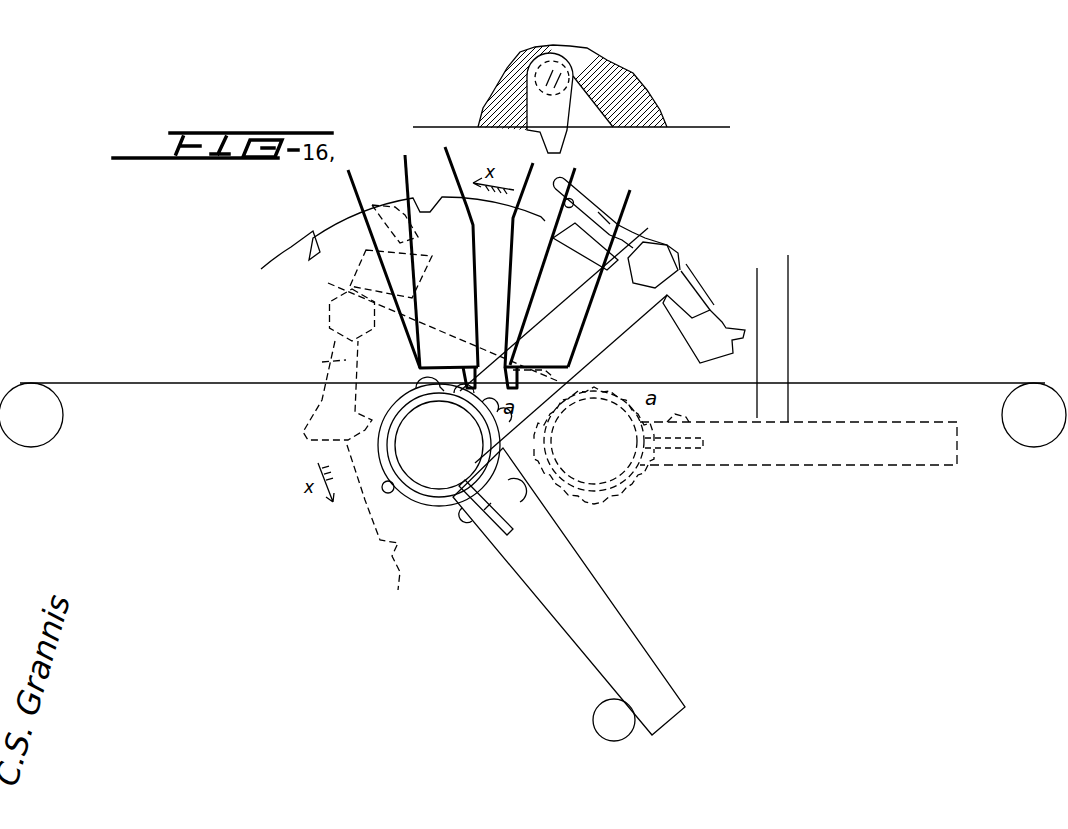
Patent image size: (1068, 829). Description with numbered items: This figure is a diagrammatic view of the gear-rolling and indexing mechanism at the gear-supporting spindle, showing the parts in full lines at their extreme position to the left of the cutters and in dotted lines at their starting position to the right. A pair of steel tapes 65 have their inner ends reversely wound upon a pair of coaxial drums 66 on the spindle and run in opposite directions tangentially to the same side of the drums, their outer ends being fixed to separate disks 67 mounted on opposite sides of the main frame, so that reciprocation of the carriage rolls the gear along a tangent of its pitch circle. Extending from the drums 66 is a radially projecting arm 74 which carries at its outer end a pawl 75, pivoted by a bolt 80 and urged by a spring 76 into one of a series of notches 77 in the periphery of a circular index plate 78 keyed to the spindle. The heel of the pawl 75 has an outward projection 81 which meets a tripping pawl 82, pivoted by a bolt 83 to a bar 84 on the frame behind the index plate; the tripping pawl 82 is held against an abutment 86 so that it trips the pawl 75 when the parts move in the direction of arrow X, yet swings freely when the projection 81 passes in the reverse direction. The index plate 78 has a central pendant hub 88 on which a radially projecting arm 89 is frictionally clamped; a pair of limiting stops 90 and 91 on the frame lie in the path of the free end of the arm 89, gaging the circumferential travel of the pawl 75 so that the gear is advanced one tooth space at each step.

The steel tapes 65 is at (218, 382).
The coaxial drums 66 is at (427, 503).
The disks 67 is at (50, 430).
The radially projecting arm 74 is at (620, 328).
The pawl 75 is at (593, 200).
The spring 76 is at (602, 208).
The notches 77 is at (305, 242).
The index plate 78 is at (262, 272).
The bolt 80 is at (660, 259).
The outward projection 81 is at (388, 203).
The tripping pawl 82 is at (552, 134).
The bolt 83 is at (568, 84).
The bar 84 is at (667, 127).
The abutment 86 is at (527, 100).
The central pendant hub 88 is at (403, 450).
The radially projecting arm 89 is at (593, 610).
The limiting stop 90 is at (782, 407).
The limiting stop 91 is at (603, 712).